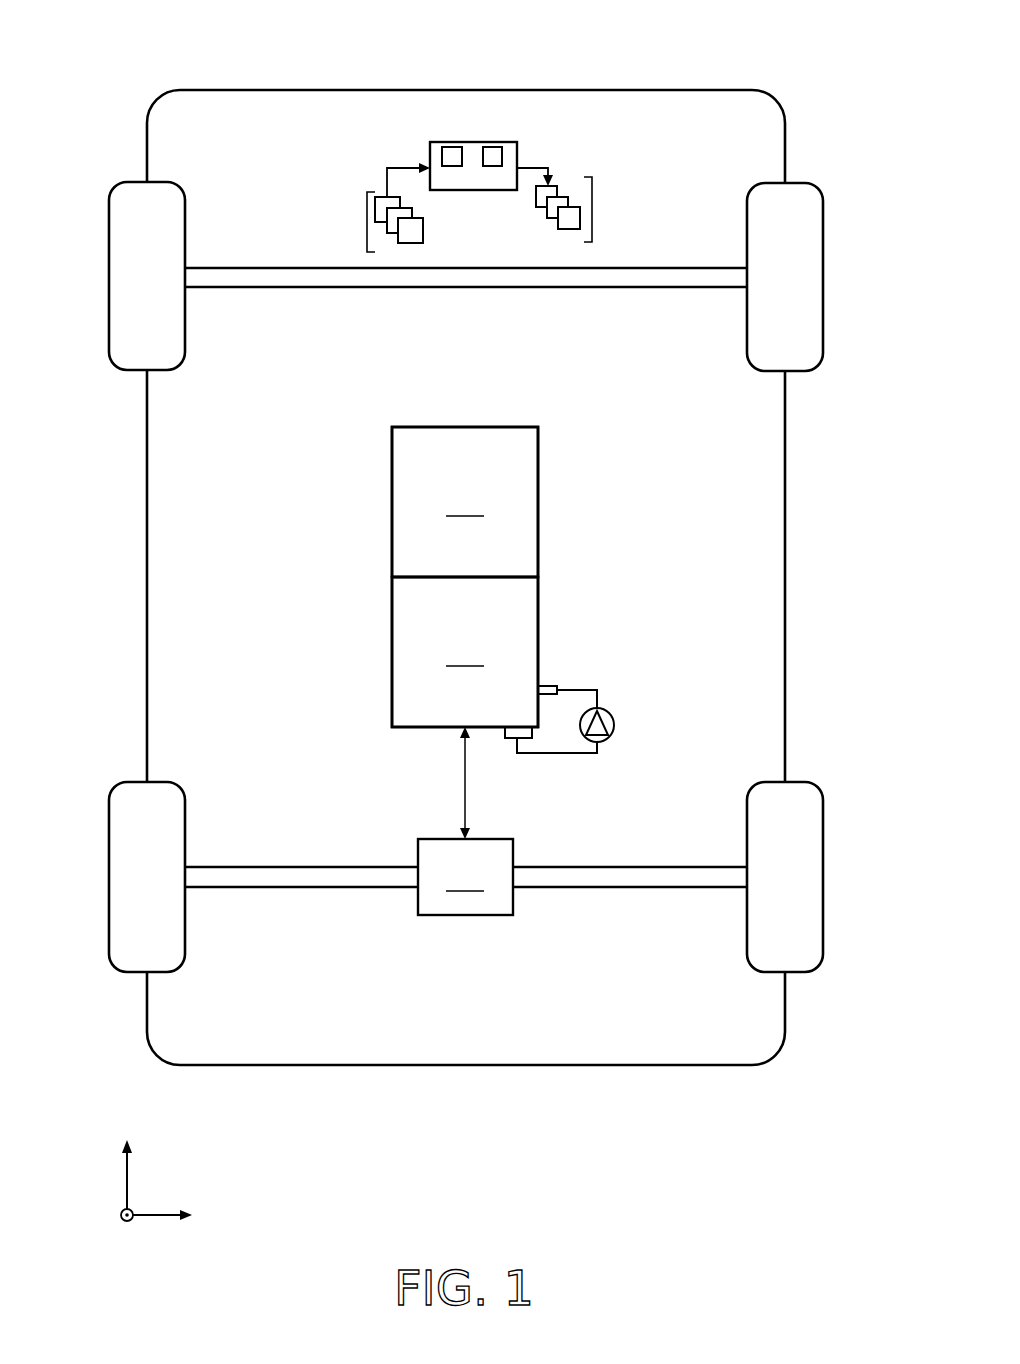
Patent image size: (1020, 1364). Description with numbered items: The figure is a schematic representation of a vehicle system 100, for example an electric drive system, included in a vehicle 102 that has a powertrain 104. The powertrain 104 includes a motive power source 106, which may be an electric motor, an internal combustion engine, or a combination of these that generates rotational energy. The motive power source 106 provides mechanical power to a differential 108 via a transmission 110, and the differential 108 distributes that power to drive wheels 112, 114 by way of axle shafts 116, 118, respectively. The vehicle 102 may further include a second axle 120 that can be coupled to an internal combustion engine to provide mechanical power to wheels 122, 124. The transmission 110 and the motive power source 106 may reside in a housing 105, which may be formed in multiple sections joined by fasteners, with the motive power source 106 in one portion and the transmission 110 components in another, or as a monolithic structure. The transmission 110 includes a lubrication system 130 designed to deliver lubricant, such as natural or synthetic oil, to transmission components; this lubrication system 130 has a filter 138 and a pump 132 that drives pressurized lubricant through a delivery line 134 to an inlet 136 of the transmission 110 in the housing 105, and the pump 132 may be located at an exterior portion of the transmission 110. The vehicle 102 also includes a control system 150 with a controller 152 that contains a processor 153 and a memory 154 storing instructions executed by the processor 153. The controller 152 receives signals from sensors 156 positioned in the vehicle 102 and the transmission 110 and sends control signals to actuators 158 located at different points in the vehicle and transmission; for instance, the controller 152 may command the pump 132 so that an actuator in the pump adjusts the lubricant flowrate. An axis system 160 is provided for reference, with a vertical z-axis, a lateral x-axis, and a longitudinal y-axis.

The vehicle system 100 is at (500, 533).
The vehicle 102 is at (680, 90).
The powertrain 104 is at (397, 564).
The housing 105 is at (392, 567).
The motive power source 106 is at (465, 502).
The differential 108 is at (465, 821).
The transmission 110 is at (465, 652).
The drive wheel 112 is at (108, 955).
The drive wheel 114 is at (823, 952).
The axle shaft 116 is at (293, 887).
The axle shaft 118 is at (677, 887).
The second axle 120 is at (307, 288).
The wheel 122 is at (108, 353).
The wheel 124 is at (823, 353).
The lubrication system 130 is at (609, 695).
The pump 132 is at (615, 728).
The delivery line 134 is at (597, 698).
The inlet 136 is at (553, 683).
The filter 138 is at (498, 740).
The control system 150 is at (453, 174).
The controller 152 is at (472, 143).
The processor 153 is at (438, 142).
The memory 154 is at (508, 142).
The sensors 156 is at (367, 222).
The actuators 158 is at (592, 208).
The axis system 160 is at (198, 1152).